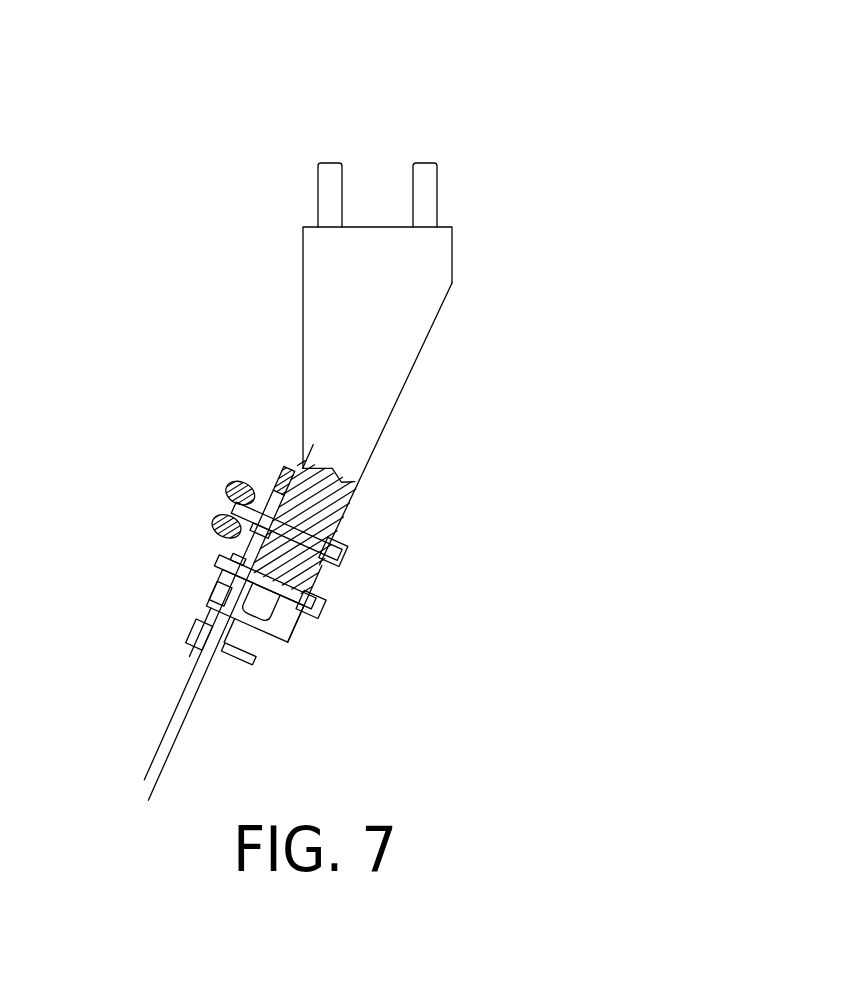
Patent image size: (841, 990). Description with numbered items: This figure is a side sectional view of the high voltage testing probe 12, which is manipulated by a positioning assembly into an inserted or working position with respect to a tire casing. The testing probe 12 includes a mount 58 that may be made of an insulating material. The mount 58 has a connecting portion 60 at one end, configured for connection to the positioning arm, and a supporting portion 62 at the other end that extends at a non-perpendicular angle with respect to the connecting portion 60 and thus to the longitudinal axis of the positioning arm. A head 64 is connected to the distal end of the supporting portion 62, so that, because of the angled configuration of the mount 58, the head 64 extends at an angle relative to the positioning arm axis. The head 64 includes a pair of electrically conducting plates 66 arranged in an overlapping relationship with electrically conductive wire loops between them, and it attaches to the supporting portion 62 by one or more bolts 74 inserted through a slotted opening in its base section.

The testing probe 12 is at (282, 417).
The mount 58 is at (500, 357).
The connecting portion 60 is at (437, 268).
The supporting portion 62 is at (410, 522).
The head 64 is at (63, 707).
The plates 66 is at (128, 600).
The bolts 74 is at (427, 641).